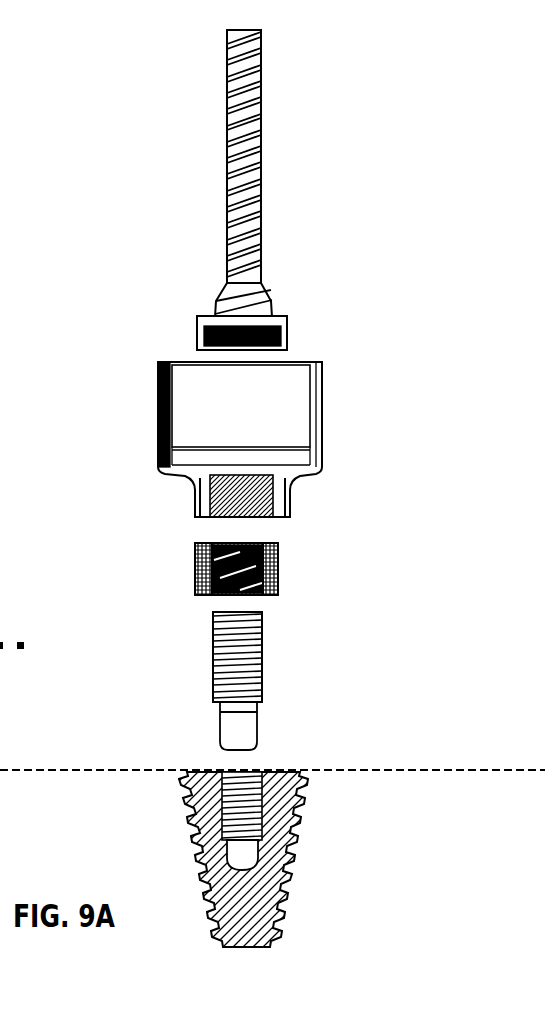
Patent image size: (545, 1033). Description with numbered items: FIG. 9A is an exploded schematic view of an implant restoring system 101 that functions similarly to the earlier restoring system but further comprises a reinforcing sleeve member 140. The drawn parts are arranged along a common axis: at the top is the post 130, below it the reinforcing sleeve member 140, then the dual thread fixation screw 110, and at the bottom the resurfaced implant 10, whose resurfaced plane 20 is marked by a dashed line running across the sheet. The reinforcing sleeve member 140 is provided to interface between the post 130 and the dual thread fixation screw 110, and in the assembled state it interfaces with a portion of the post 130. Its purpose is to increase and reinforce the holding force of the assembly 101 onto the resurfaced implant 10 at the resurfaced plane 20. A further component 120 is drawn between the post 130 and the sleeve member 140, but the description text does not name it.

The implant restoring system 101 is at (127, 218).
The post 130 is at (302, 140).
The abutment / coping 120 is at (342, 413).
The reinforcing sleeve member 140 is at (298, 562).
The dual thread fixation screw 110 is at (312, 670).
The resurfaced implant 10 is at (312, 837).
The resurfaced plane 20 is at (23, 640).